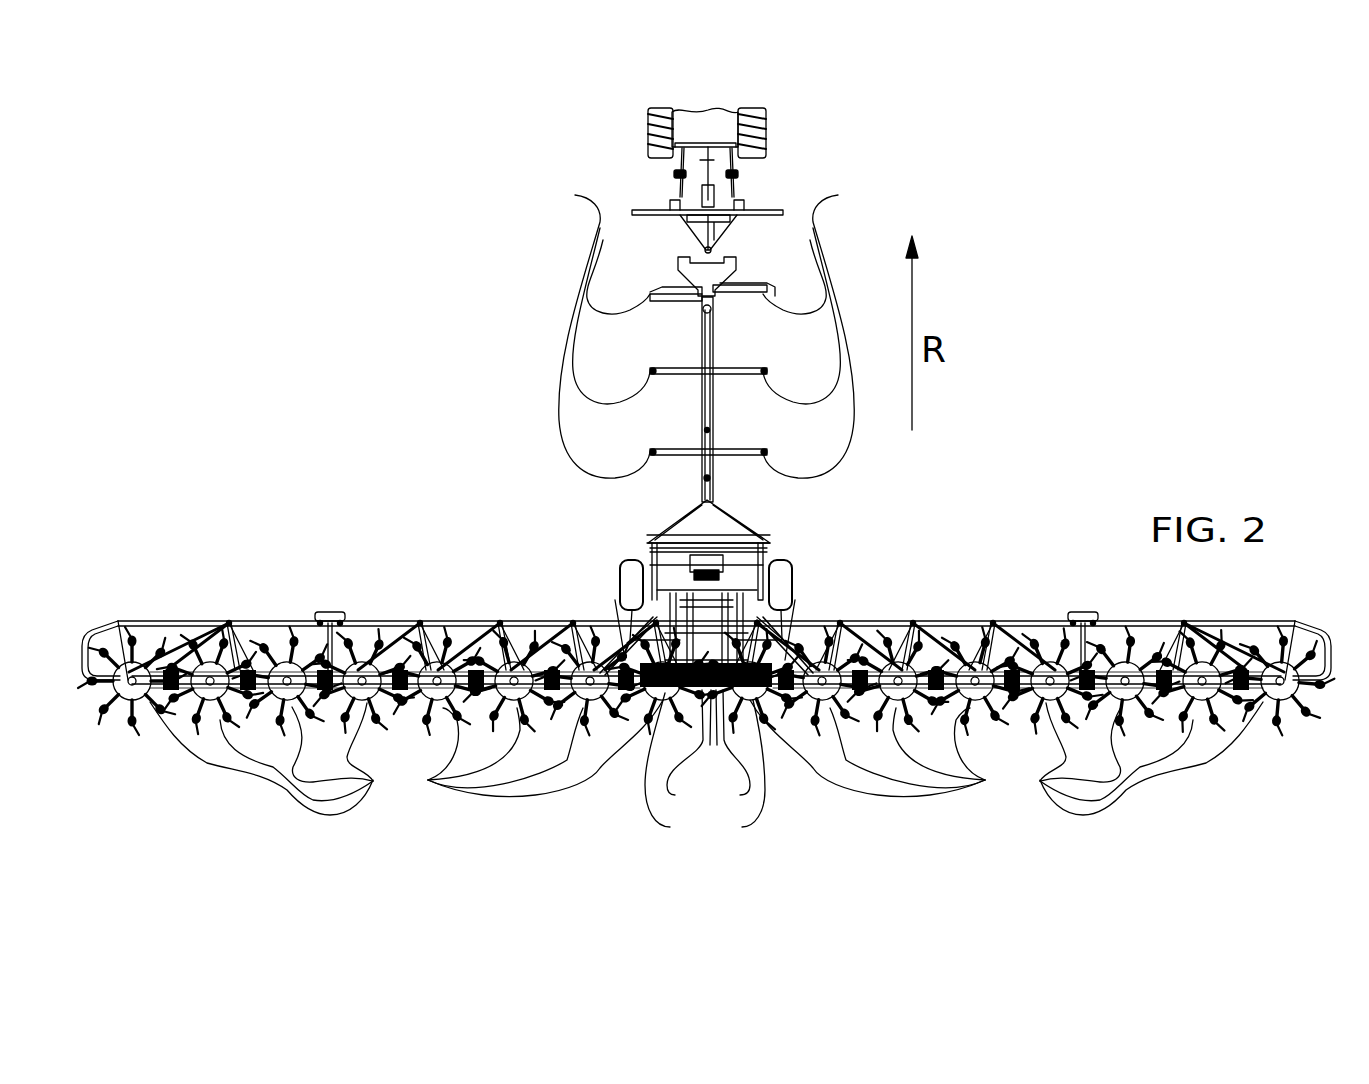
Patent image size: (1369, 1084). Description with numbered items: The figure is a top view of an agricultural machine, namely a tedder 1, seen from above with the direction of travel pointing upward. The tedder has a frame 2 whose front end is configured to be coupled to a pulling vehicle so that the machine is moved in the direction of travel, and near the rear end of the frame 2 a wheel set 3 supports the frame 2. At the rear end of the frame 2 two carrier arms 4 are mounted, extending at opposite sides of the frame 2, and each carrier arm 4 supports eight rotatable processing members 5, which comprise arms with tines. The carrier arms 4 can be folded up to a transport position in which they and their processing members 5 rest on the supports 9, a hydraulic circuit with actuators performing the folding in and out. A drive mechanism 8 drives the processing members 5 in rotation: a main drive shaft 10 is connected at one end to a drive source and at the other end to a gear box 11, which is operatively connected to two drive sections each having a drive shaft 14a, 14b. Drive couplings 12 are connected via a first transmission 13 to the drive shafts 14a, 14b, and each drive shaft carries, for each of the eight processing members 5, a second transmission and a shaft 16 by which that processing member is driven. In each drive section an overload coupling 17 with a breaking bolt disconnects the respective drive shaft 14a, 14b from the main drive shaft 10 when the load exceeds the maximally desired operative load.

The tedder 1 is at (946, 411).
The frame 2 is at (716, 476).
The wheel set 3 is at (808, 585).
The carrier arms 4 is at (424, 620).
The rotatable processing members 5 is at (428, 780).
The drive mechanism 8 is at (840, 628).
The supports 9 is at (576, 196).
The main drive shaft 10 is at (712, 229).
The gear box 11 is at (692, 542).
The drive couplings 12 is at (668, 605).
The first transmission 13 is at (740, 795).
The drive shaft 14a is at (960, 645).
The drive shaft 14b is at (467, 650).
The shaft 16 is at (277, 650).
The overload coupling 17 is at (742, 827).